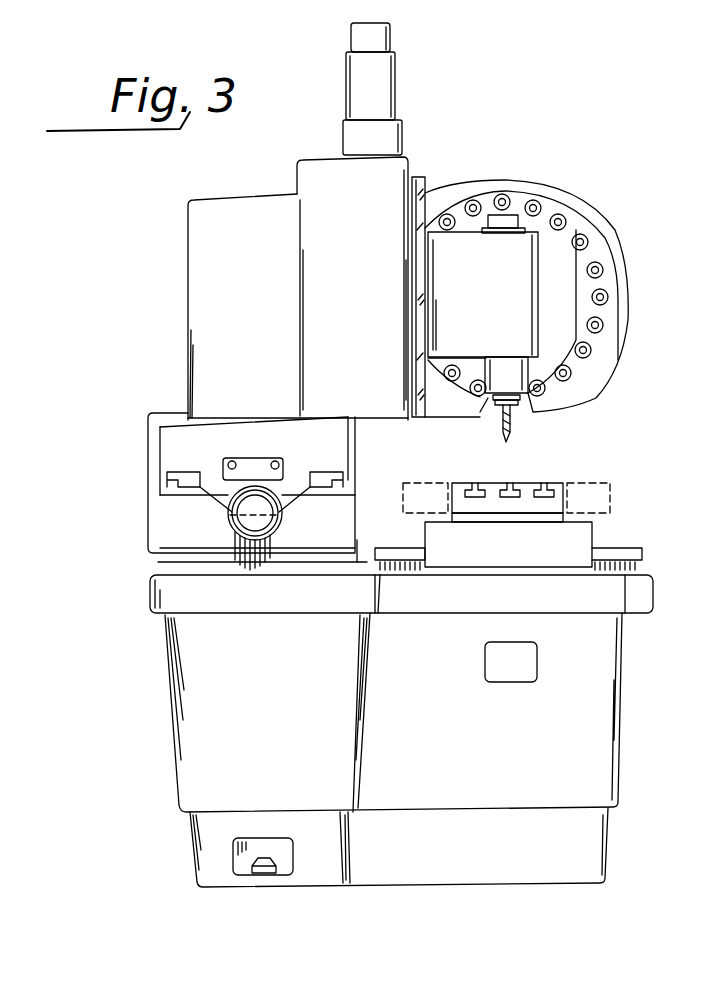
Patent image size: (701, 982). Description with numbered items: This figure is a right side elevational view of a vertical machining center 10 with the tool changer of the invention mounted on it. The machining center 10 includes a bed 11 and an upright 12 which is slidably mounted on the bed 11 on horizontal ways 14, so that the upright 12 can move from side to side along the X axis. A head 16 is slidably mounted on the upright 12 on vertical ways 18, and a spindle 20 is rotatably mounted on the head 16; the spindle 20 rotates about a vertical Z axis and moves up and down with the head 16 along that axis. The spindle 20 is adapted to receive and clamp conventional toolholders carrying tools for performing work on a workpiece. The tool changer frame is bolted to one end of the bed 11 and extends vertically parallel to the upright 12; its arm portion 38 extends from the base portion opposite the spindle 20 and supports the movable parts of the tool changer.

The vertical machining center 10 is at (165, 392).
The bed 11 is at (190, 697).
The upright 12 is at (218, 312).
The horizontal ways 14 is at (332, 470).
The head 16 is at (498, 300).
The vertical ways 18 is at (425, 190).
The spindle 20 is at (488, 403).
The arm portion 38 is at (598, 222).